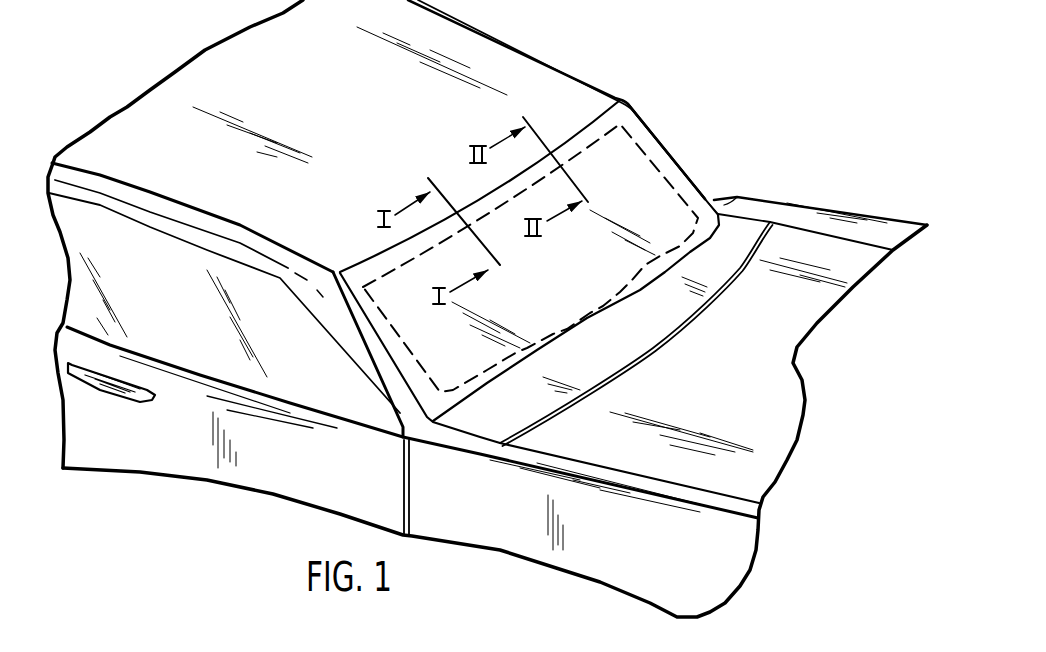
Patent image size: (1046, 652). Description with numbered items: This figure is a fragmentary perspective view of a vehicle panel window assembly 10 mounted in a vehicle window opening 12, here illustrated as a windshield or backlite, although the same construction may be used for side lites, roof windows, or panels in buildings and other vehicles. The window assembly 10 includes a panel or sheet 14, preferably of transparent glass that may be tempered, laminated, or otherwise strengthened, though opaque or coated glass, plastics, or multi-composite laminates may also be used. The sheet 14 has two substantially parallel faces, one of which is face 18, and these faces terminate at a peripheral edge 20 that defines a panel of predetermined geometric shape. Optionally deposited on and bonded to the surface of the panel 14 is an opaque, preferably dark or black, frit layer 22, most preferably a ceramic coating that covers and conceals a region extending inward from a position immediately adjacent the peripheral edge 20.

The vehicle panel window assembly 10 is at (643, 130).
The vehicle window opening 12 is at (659, 172).
The panel or sheet 14 is at (704, 198).
The face 18 is at (667, 233).
The peripheral edge 20 is at (333, 268).
The frit layer 22 is at (627, 300).